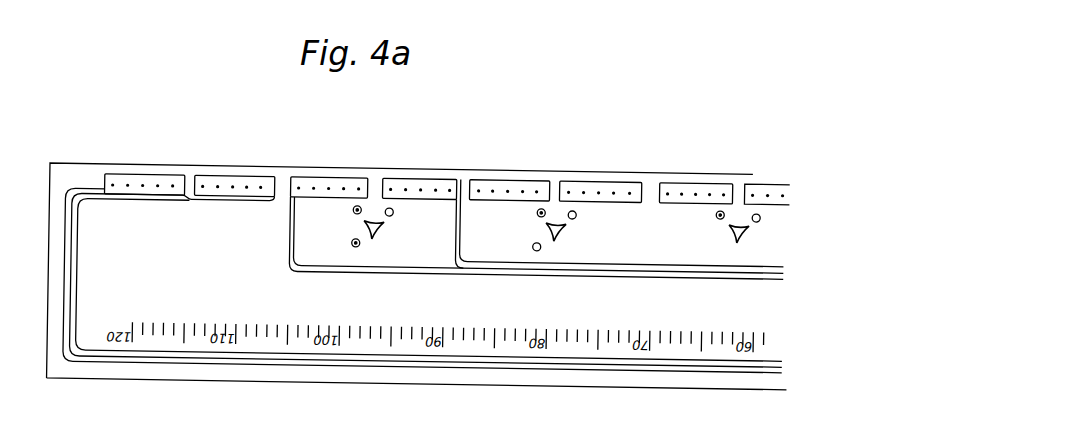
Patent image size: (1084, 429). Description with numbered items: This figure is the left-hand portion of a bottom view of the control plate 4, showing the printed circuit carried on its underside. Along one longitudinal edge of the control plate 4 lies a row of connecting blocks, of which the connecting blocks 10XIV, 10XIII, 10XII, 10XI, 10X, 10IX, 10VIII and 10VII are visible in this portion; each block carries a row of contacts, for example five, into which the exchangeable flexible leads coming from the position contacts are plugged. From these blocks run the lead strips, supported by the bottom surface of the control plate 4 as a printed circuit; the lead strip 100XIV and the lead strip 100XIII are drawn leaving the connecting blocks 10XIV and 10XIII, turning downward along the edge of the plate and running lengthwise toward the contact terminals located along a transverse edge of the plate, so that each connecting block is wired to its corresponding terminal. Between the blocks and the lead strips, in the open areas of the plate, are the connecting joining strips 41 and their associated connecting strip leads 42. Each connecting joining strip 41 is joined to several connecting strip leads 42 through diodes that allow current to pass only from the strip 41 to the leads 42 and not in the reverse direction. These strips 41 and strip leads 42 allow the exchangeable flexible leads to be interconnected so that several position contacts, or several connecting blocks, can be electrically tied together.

The control plate 4 is at (275, 204).
The connecting block 10XIV is at (132, 173).
The connecting block 10XIII is at (220, 173).
The connecting block 10XII is at (318, 173).
The connecting block 10XI is at (408, 173).
The connecting block 10X is at (500, 173).
The connecting block 10IX is at (595, 173).
The connecting block 10VIII is at (683, 173).
The connecting block 10VII is at (768, 173).
The lead strip 100XIV is at (67, 248).
The lead strip 100XIII is at (128, 288).
The connecting joining strip 41 is at (384, 224).
The connecting strip lead 42 is at (353, 238).